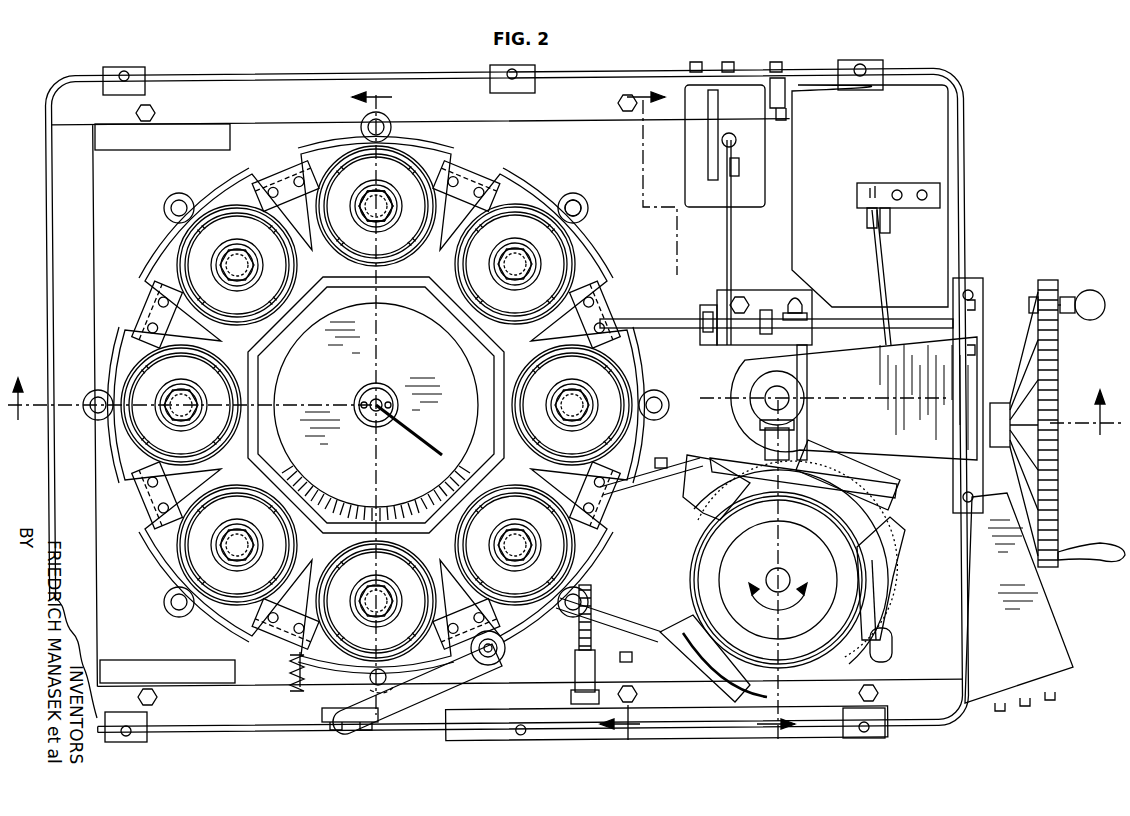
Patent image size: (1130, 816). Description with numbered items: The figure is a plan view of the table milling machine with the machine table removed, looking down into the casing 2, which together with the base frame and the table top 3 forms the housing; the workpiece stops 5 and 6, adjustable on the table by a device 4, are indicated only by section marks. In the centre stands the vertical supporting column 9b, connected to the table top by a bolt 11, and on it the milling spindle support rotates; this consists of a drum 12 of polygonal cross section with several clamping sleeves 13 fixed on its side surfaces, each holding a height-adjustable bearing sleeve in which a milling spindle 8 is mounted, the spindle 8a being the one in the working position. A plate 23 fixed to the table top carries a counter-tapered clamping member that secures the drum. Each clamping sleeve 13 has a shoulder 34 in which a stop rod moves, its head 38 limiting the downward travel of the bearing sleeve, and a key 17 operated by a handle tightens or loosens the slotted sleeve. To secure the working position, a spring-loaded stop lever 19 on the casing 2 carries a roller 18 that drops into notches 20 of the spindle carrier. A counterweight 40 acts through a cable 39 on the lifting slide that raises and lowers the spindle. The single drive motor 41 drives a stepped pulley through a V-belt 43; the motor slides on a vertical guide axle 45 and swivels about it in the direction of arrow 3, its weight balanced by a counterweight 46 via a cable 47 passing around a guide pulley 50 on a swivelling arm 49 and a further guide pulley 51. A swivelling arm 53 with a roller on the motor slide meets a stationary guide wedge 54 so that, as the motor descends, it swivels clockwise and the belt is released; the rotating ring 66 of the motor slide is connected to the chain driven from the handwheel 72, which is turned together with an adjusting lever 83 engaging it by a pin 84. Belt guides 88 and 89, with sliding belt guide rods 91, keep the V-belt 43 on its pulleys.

The casing 2 is at (912, 70).
The table top 3 is at (778, 602).
The device 4 is at (566, 392).
The stop 5 is at (484, 412).
The stop 6 is at (721, 412).
The milling spindle 8 is at (382, 200).
The milling spindle in working position 8a is at (390, 210).
The supporting column 9b is at (372, 427).
The bolt 11 is at (382, 394).
The drum 12 is at (280, 356).
The clamping sleeve 13 is at (243, 192).
The key 17 is at (592, 590).
The roller 18 is at (499, 657).
The stop lever 19 is at (430, 686).
The notch 20 is at (472, 160).
The plate 23 is at (376, 412).
The shoulder 34 is at (588, 208).
The head 38 is at (575, 200).
The cable 39 is at (732, 243).
The counterweight 40 is at (707, 206).
The drive motor 41 is at (778, 581).
The V-belt 43 is at (640, 490).
The guide axle 45 is at (790, 393).
The counterweight 46 is at (794, 203).
The cable 47 is at (880, 283).
The arm 49 is at (855, 456).
The guide pulley 50 is at (880, 400).
The guide pulley 51 is at (882, 243).
The swivelling arm 53 is at (814, 298).
The guide wedge 54 is at (785, 290).
The rotating ring 66 is at (712, 336).
The handwheel 72 is at (1058, 492).
The adjusting lever 83 is at (1070, 316).
The pin 84 is at (1034, 295).
The belt guide 88 is at (881, 550).
The belt guide 89 is at (870, 655).
The belt guide rod 91 is at (660, 462).